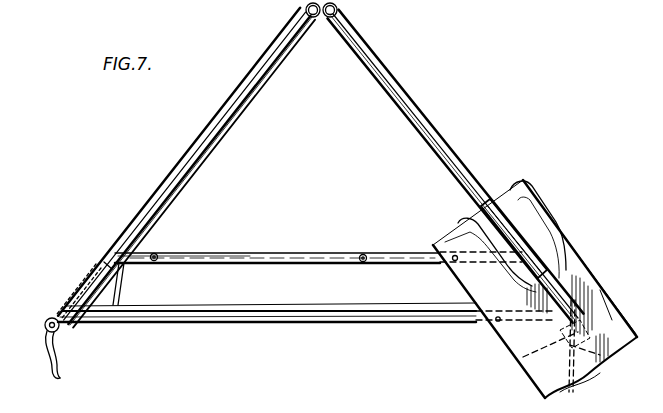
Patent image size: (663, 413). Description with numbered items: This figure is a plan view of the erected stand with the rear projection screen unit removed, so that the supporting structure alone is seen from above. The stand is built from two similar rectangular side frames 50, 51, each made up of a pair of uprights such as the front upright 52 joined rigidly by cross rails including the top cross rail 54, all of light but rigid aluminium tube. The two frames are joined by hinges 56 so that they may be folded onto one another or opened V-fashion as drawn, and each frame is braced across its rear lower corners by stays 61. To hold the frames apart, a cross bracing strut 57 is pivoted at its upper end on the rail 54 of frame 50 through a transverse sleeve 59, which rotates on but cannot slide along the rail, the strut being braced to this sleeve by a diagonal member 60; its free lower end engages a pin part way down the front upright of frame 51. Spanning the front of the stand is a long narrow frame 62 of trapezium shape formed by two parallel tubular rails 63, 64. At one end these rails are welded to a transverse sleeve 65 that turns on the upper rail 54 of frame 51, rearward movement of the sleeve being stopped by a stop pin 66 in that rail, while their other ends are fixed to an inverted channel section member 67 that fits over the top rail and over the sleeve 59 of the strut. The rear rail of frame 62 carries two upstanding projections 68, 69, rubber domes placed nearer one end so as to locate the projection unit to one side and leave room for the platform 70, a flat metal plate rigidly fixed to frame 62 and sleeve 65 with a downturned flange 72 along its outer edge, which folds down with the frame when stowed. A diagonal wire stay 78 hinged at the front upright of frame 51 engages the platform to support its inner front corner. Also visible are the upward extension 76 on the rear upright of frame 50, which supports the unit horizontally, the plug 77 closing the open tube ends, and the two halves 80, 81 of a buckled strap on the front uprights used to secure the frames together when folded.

The side frame 50 is at (139, 226).
The side frame 51 is at (412, 109).
The upright 52 is at (600, 273).
The top cross rail 54 is at (164, 206).
The hinge 56 is at (316, 19).
The cross bracing strut 57 is at (212, 303).
The transverse sleeve 59 is at (90, 272).
The diagonal member 60 is at (123, 282).
The stay 61 is at (247, 77).
The long narrow frame 62 is at (288, 255).
The parallel rail 63 is at (252, 245).
The parallel rail 64 is at (275, 326).
The transverse sleeve 65 is at (508, 222).
The stop pin 66 is at (488, 201).
The inverted channel section member 67 is at (66, 326).
The upstanding projection 68 is at (158, 255).
The upstanding projection 69 is at (364, 254).
The platform 70 is at (608, 320).
The downturned flange 72 is at (567, 241).
The upward extension 76 is at (306, 9).
The plug 77 is at (338, 9).
The diagonal wire stay 78 is at (600, 359).
The strap half 80 is at (59, 376).
The strap half 81 is at (523, 357).